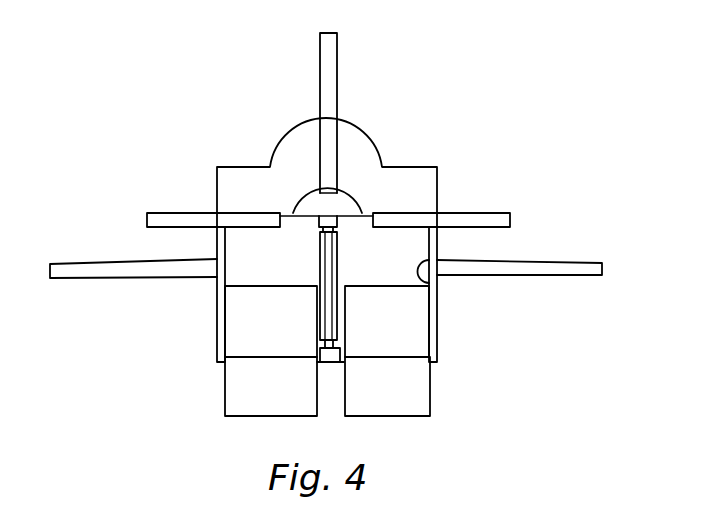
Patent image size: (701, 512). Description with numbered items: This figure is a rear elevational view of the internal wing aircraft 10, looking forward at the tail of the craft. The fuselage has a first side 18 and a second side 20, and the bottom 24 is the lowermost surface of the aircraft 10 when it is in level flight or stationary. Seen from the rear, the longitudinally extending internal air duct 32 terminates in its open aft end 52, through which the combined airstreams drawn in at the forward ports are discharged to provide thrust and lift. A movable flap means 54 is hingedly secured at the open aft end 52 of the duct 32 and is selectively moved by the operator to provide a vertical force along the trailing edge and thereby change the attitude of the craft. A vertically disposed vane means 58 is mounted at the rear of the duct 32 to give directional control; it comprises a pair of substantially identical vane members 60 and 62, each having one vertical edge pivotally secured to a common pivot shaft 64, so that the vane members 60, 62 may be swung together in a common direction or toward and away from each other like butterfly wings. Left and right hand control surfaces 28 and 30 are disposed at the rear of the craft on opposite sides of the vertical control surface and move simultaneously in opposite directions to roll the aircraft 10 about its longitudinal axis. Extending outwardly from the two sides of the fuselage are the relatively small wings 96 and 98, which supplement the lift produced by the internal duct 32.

The internal wing aircraft 10 is at (392, 124).
The first side 18 is at (217, 310).
The second side 20 is at (439, 323).
The bottom 24 is at (333, 363).
The left hand control surface 28 is at (172, 222).
The right hand control surface 30 is at (482, 221).
The internal air duct 32 is at (412, 245).
The open aft end 52 is at (430, 281).
The movable flap means 54 is at (230, 405).
The vane means 58 is at (339, 272).
The vane member 60 is at (335, 308).
The vane member 62 is at (319, 306).
The pivot shaft 64 is at (325, 232).
The wing 96 is at (73, 266).
The wing 98 is at (576, 266).